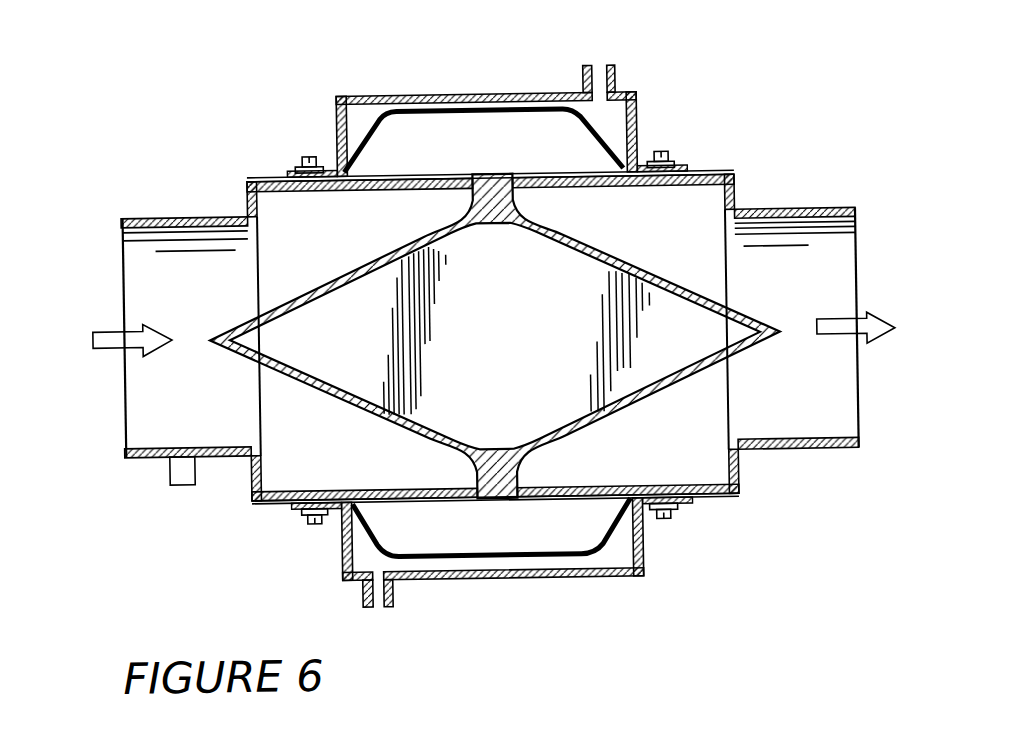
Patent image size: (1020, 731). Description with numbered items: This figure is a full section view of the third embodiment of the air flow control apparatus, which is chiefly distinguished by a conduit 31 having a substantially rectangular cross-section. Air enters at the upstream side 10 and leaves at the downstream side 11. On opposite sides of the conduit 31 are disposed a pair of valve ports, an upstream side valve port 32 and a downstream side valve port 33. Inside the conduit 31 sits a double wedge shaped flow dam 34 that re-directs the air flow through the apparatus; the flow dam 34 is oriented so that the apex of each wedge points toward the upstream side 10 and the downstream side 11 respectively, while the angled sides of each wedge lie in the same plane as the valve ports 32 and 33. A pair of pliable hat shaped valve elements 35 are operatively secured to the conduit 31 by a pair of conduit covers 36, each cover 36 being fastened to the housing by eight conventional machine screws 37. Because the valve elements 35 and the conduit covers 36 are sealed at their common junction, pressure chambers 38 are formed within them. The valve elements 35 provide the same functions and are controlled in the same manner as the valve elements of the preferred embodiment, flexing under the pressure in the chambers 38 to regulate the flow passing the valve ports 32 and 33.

The upstream side 10 is at (189, 405).
The downstream side 11 is at (812, 403).
The conduit 31 is at (262, 497).
The valve port 32 is at (424, 172).
The valve port 33 is at (558, 174).
The double wedge shaped flow dam 34 is at (598, 252).
The pliable hat shaped valve element 35 is at (606, 130).
The conduit cover 36 is at (391, 95).
The machine screw 37 is at (303, 155).
The pressure chamber 38 is at (360, 120).